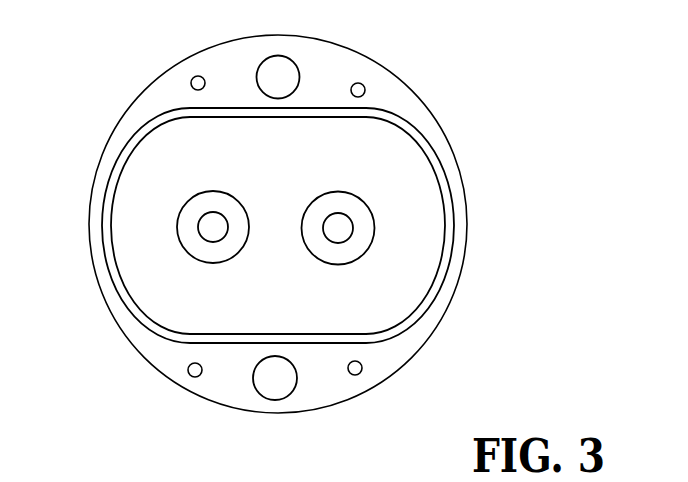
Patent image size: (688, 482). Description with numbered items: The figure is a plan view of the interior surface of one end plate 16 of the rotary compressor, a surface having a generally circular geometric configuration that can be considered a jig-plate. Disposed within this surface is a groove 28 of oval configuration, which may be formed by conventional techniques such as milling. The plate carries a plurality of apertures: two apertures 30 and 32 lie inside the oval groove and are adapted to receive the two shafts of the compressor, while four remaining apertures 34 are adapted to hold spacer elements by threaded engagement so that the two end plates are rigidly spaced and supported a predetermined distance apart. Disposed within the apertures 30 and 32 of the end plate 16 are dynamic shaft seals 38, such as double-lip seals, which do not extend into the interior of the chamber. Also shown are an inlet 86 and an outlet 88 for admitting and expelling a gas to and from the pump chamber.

The end plate 16 is at (431, 108).
The groove 28 is at (448, 197).
The aperture 30 is at (218, 190).
The aperture 32 is at (382, 160).
The apertures 34 is at (192, 77).
The dynamic shaft seals 38 is at (206, 241).
The inlet 86 is at (293, 61).
The outlet 88 is at (291, 394).